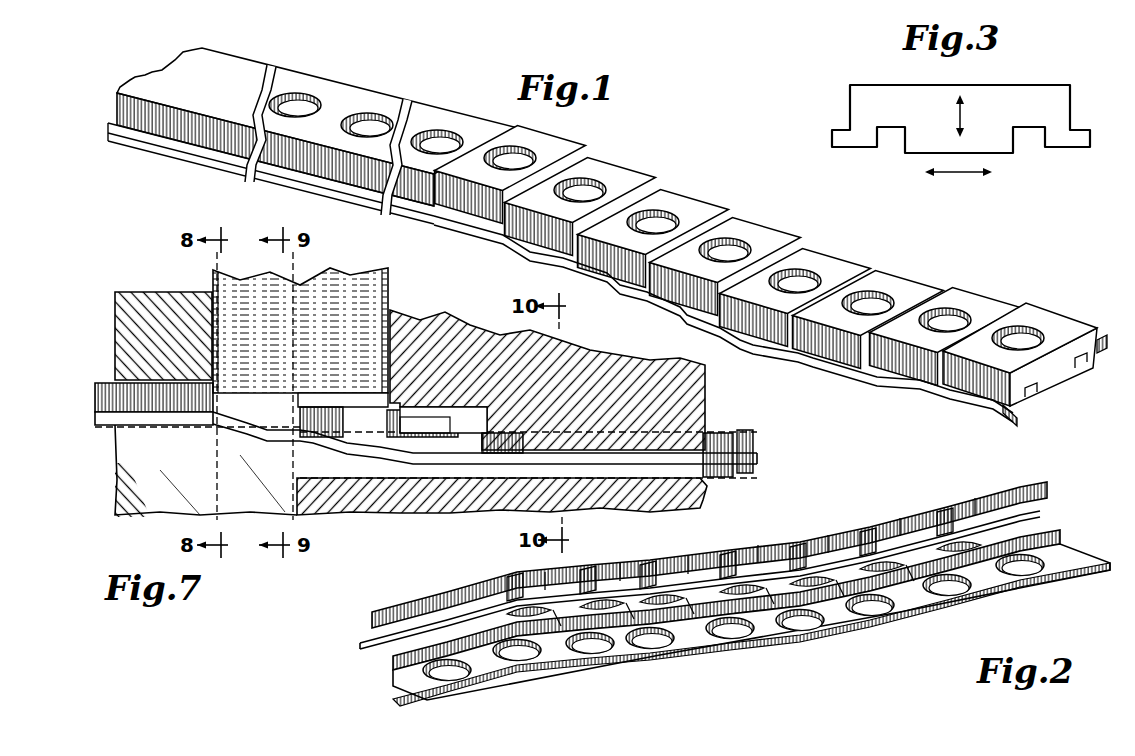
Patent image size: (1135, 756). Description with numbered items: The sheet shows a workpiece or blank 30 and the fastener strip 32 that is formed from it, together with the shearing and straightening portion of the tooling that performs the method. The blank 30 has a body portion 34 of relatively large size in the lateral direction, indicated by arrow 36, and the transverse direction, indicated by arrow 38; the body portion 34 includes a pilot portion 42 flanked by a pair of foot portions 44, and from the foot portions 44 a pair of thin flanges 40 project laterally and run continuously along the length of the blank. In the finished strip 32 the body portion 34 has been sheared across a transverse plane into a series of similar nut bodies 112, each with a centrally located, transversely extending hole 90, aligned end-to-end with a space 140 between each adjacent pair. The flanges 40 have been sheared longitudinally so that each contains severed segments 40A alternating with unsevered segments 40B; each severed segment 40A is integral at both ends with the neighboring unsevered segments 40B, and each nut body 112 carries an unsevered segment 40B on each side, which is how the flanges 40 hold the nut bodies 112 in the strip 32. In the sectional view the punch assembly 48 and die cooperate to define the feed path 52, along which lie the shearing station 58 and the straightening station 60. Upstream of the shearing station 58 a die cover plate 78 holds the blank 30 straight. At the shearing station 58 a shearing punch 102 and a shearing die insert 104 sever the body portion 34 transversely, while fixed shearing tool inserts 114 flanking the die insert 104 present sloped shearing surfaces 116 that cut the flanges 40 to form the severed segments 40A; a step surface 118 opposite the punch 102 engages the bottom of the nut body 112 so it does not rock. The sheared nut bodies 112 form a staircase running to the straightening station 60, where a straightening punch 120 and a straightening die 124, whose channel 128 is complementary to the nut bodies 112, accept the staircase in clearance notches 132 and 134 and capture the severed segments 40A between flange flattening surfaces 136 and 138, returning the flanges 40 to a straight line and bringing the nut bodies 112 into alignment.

In FIG. 1, the blank 30 is at (562, 227).
In FIG. 3, the blank 30 is at (1056, 69).
In FIG. 2, the blank 30 is at (713, 596).
In FIG. 1, the fastener strip 32 is at (1068, 310).
In FIG. 7, the fastener strip 32 is at (418, 406).
In FIG. 2, the fastener strip 32 is at (796, 566).
In FIG. 1, the body portion 34 is at (306, 152).
In FIG. 3, the body portion 34 is at (883, 88).
In FIG. 7, the body portion 34 is at (100, 395).
In FIG. 2, the body portion 34 is at (428, 600).
In FIG. 3, the lateral direction arrow 36 is at (956, 176).
In FIG. 3, the transverse direction arrow 38 is at (965, 115).
In FIG. 1, the flanges 40 is at (160, 150).
In FIG. 3, the flanges 40 is at (828, 140).
In FIG. 7, the flanges 40 is at (162, 425).
In FIG. 2, the flanges 40 is at (362, 645).
In FIG. 1, the severed flange segments 40A is at (513, 243).
In FIG. 7, the severed flange segments 40A is at (237, 415).
In FIG. 2, the severed flange segments 40A is at (528, 576).
In FIG. 1, the unsevered flange segments 40B is at (553, 257).
In FIG. 7, the unsevered flange segments 40B is at (273, 440).
In FIG. 2, the unsevered flange segments 40B is at (565, 580).
In FIG. 3, the pilot portion 42 is at (928, 154).
In FIG. 7, the pilot portion 42 is at (102, 428).
In FIG. 2, the pilot portion 42 is at (400, 672).
In FIG. 3, the foot portions 44 is at (874, 145).
In FIG. 2, the foot portions 44 is at (375, 655).
In FIG. 7, the punch assembly 48 is at (547, 357).
In FIG. 7, the feed path 52 is at (445, 505).
In FIG. 7, the shearing station 58 is at (200, 282).
In FIG. 7, the straightening station 60 is at (722, 490).
In FIG. 7, the die cover plate 78 is at (132, 292).
In FIG. 1, the hole 90 is at (298, 98).
In FIG. 2, the hole 90 is at (455, 672).
In FIG. 7, the shearing punch 102 is at (340, 275).
In FIG. 7, the shearing die insert 104 is at (215, 508).
In FIG. 1, the nut body 112 is at (612, 172).
In FIG. 7, the nut body 112 is at (270, 405).
In FIG. 2, the nut body 112 is at (565, 580).
In FIG. 7, the shearing tool inserts 114 is at (152, 508).
In FIG. 7, the shearing surfaces 116 is at (257, 440).
In FIG. 7, the step surface 118 is at (225, 446).
In FIG. 7, the straightening punch 120 is at (445, 345).
In FIG. 7, the straightening die 124 is at (400, 510).
In FIG. 7, the channel 128 is at (700, 480).
In FIG. 7, the clearance notch 132 is at (448, 407).
In FIG. 7, the clearance notch 134 is at (295, 465).
In FIG. 7, the flange flattening surface 136 is at (668, 445).
In FIG. 7, the flange flattening surface 138 is at (582, 477).
In FIG. 1, the space 140 is at (860, 272).
In FIG. 7, the space 140 is at (548, 442).
In FIG. 2, the space 140 is at (762, 548).